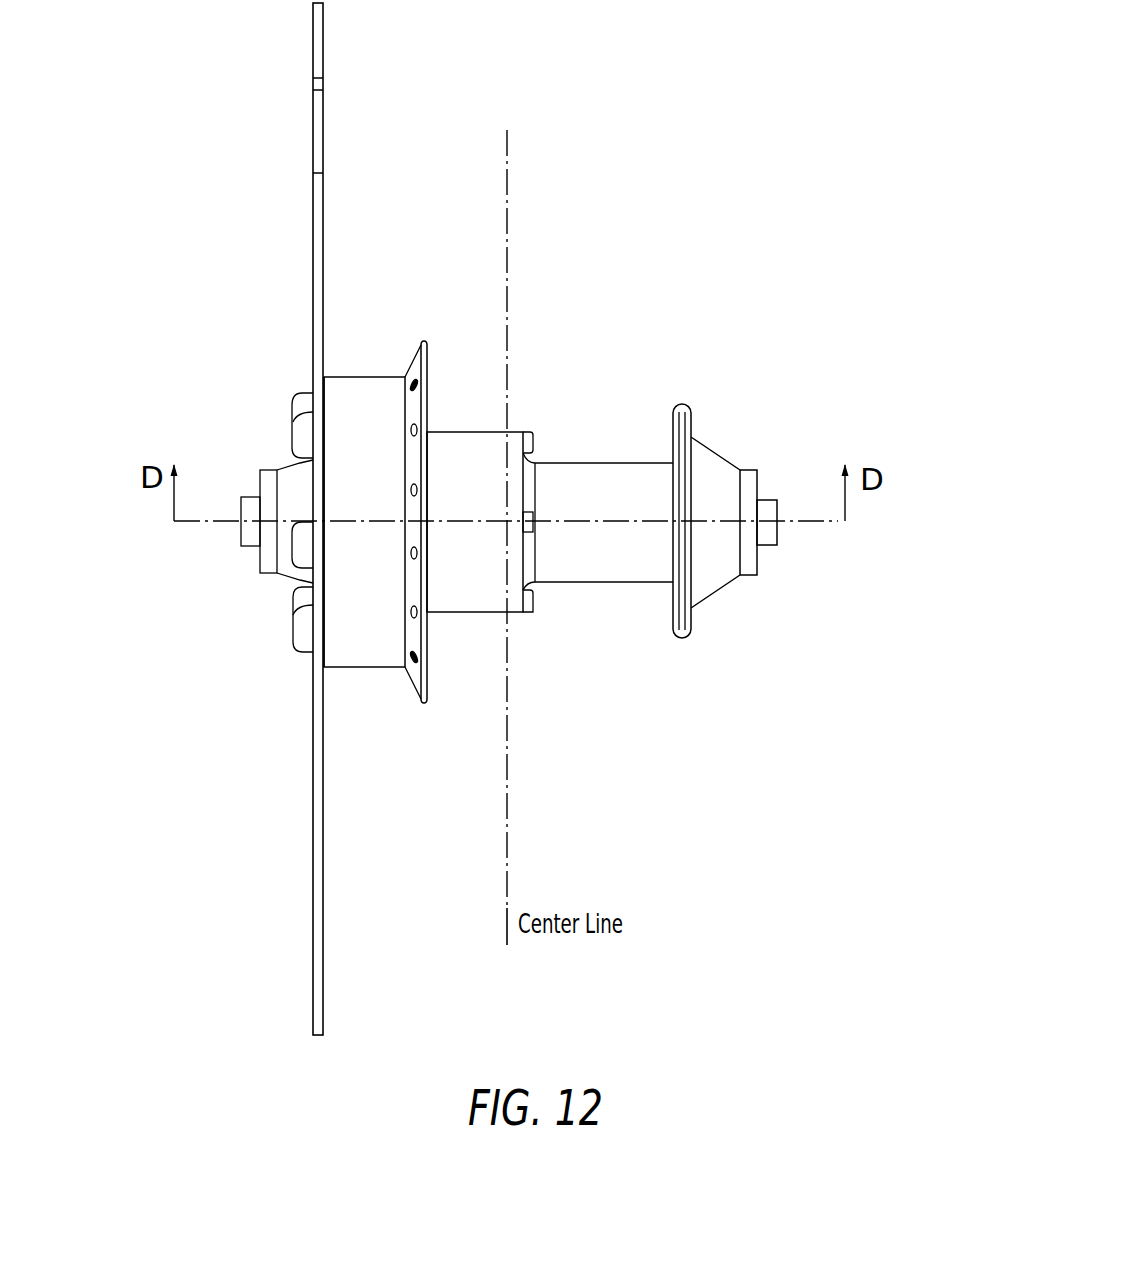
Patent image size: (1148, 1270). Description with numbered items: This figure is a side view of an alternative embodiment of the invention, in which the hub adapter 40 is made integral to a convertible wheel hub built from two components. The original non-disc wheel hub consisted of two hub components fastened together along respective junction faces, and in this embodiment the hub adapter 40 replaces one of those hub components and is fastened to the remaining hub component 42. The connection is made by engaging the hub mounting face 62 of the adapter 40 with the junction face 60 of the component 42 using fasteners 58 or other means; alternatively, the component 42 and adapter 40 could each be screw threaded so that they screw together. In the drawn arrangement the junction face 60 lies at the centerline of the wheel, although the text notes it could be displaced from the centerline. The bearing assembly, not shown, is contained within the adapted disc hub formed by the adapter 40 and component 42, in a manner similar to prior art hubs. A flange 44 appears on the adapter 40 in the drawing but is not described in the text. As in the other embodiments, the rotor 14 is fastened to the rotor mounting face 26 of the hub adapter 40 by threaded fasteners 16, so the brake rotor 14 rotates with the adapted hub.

The rotor 14 is at (311, 753).
The threaded fasteners 16 is at (287, 631).
The rotor mounting face 26 is at (325, 648).
The hub adapter 40 is at (356, 371).
The hub component 42 is at (600, 461).
The flange 44 is at (408, 716).
The fasteners 58 is at (534, 429).
The junction face 60 is at (523, 592).
The hub mounting face 62 is at (513, 596).